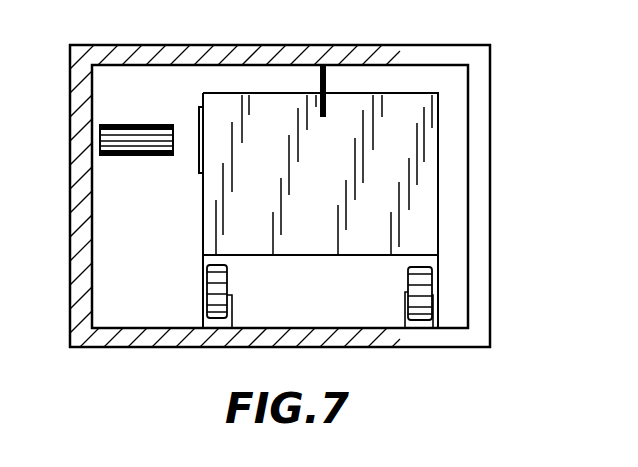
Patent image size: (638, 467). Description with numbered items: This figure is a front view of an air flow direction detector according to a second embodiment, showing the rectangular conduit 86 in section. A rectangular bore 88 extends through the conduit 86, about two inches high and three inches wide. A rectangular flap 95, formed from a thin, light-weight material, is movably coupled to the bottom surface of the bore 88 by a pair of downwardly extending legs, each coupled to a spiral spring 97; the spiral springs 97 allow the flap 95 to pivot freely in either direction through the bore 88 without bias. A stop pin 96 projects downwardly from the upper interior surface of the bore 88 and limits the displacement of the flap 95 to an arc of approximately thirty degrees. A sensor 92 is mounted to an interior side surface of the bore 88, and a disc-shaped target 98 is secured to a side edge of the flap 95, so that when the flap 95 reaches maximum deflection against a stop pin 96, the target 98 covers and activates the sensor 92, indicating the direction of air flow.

The conduit 86 is at (489, 146).
The rectangular bore 88 is at (92, 310).
The sensor 92 is at (108, 157).
The rectangular flap 95 is at (203, 217).
The stop pin 96 is at (332, 76).
The spiral spring 97 is at (227, 282).
The disc-shaped target 98 is at (198, 170).